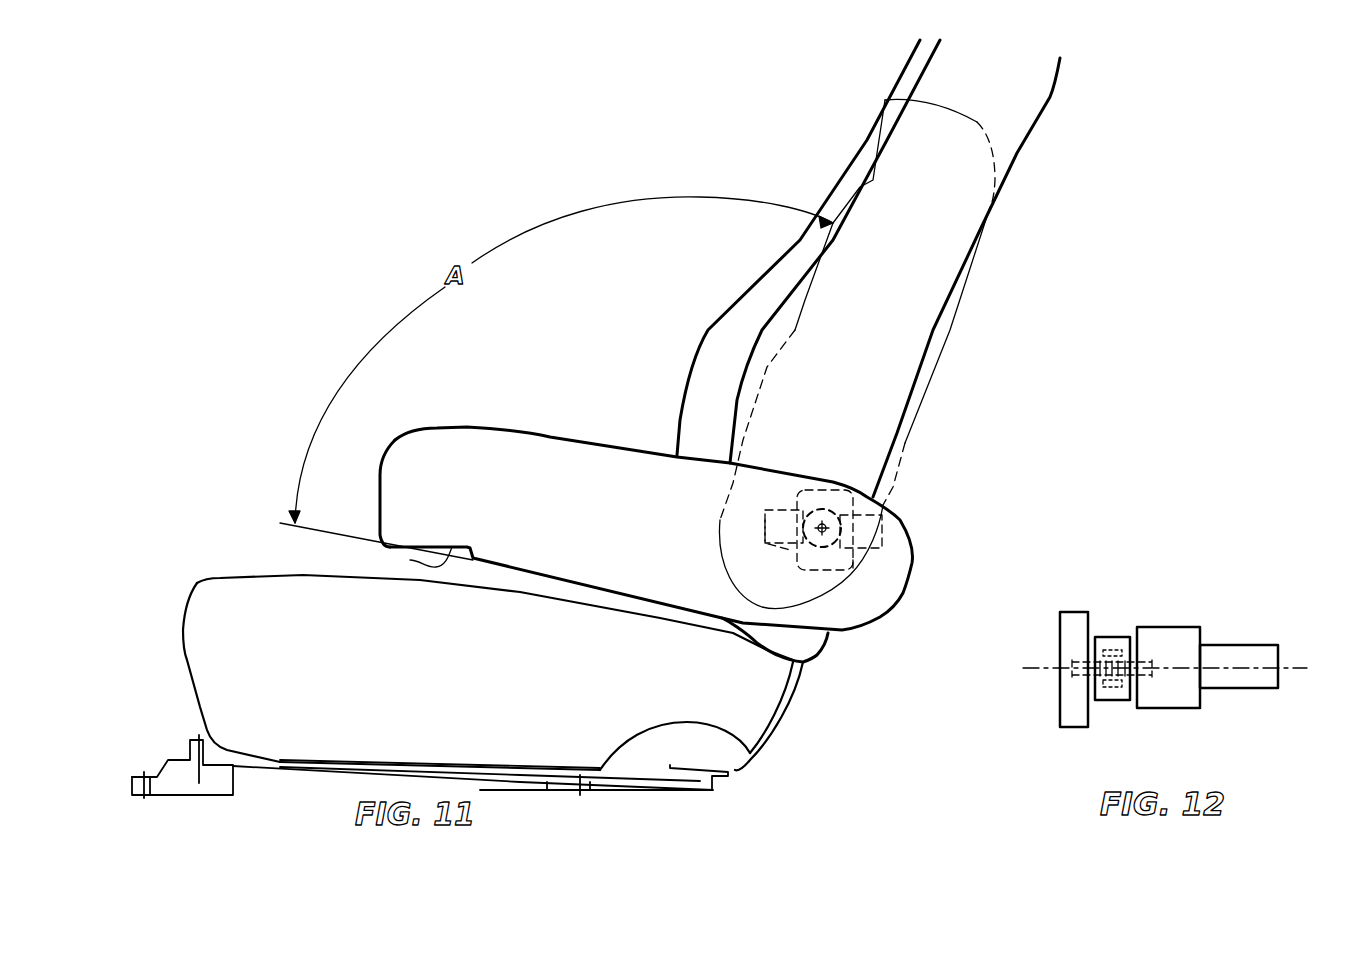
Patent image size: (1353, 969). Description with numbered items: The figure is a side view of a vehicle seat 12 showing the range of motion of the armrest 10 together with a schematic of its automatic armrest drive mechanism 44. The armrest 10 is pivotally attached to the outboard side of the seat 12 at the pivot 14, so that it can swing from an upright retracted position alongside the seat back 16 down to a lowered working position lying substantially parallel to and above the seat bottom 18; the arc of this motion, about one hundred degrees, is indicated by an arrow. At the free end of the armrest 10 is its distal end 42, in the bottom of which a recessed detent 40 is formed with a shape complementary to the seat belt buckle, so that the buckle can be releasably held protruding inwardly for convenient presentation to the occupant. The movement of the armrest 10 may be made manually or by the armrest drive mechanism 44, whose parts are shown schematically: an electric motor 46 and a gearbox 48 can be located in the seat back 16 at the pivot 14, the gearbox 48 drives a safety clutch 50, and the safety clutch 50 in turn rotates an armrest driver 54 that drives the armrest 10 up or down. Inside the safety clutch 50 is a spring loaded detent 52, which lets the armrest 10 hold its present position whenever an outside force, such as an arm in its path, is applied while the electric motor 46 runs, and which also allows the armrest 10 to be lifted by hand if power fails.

In FIG. 11, the armrest 10 is at (566, 510).
In FIG. 11, the seat 12 is at (1015, 145).
In FIG. 11, the pivot 14 is at (828, 510).
In FIG. 12, the pivot 14 is at (1288, 667).
In FIG. 11, the seat back 16 is at (726, 408).
In FIG. 11, the seat bottom 18 is at (434, 667).
In FIG. 11, the recessed detent 40 is at (410, 560).
In FIG. 11, the distal end 42 is at (432, 490).
In FIG. 11, the armrest drive mechanism 44 is at (973, 493).
In FIG. 12, the armrest drive mechanism 44 is at (1267, 745).
In FIG. 11, the electric motor 46 is at (753, 513).
In FIG. 12, the electric motor 46 is at (1258, 690).
In FIG. 11, the gearbox 48 is at (867, 515).
In FIG. 12, the gearbox 48 is at (1188, 703).
In FIG. 11, the safety clutch 50 is at (853, 570).
In FIG. 12, the safety clutch 50 is at (1113, 702).
In FIG. 11, the spring loaded detent 52 is at (790, 550).
In FIG. 12, the spring loaded detent 52 is at (1118, 632).
In FIG. 11, the armrest driver 54 is at (878, 542).
In FIG. 12, the armrest driver 54 is at (1073, 727).